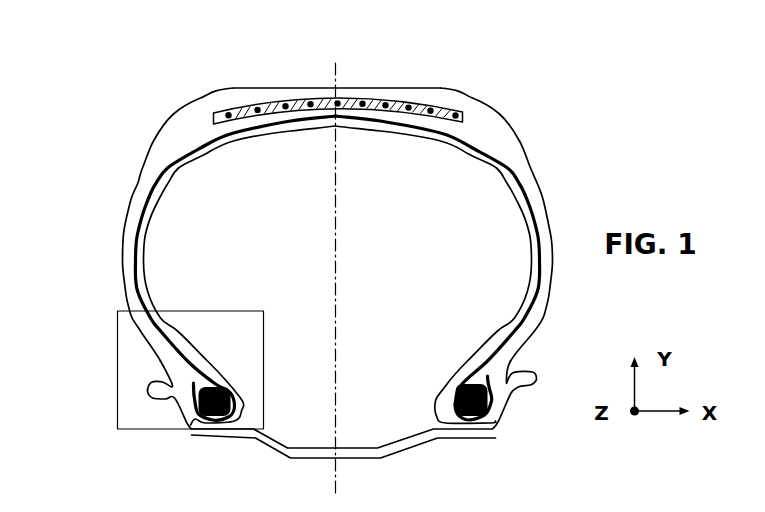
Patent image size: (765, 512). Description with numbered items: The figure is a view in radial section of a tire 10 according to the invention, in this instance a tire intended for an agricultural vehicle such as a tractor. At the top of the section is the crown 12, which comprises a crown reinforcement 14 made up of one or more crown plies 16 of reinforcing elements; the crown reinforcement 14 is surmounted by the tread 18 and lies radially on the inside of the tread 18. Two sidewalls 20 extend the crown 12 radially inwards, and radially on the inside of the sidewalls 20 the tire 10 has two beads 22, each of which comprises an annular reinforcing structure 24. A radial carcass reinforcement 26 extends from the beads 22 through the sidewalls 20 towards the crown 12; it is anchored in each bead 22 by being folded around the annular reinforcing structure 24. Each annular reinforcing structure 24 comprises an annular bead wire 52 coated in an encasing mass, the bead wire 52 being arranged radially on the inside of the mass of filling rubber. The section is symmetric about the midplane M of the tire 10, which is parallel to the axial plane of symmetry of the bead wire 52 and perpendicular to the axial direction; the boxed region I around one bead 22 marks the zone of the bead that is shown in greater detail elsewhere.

The tire 10 is at (580, 143).
The crown 12 is at (439, 70).
The crown reinforcement 14 is at (218, 106).
The crown ply 16 is at (457, 117).
The tread 18 is at (280, 86).
The sidewall 20 is at (106, 254).
The bead 22 is at (241, 337).
The annular reinforcing structure 24 is at (427, 373).
The radial carcass reinforcement 26 is at (137, 237).
The annular bead wire 52 is at (230, 402).
The detail region I is at (117, 342).
The midplane M is at (349, 287).